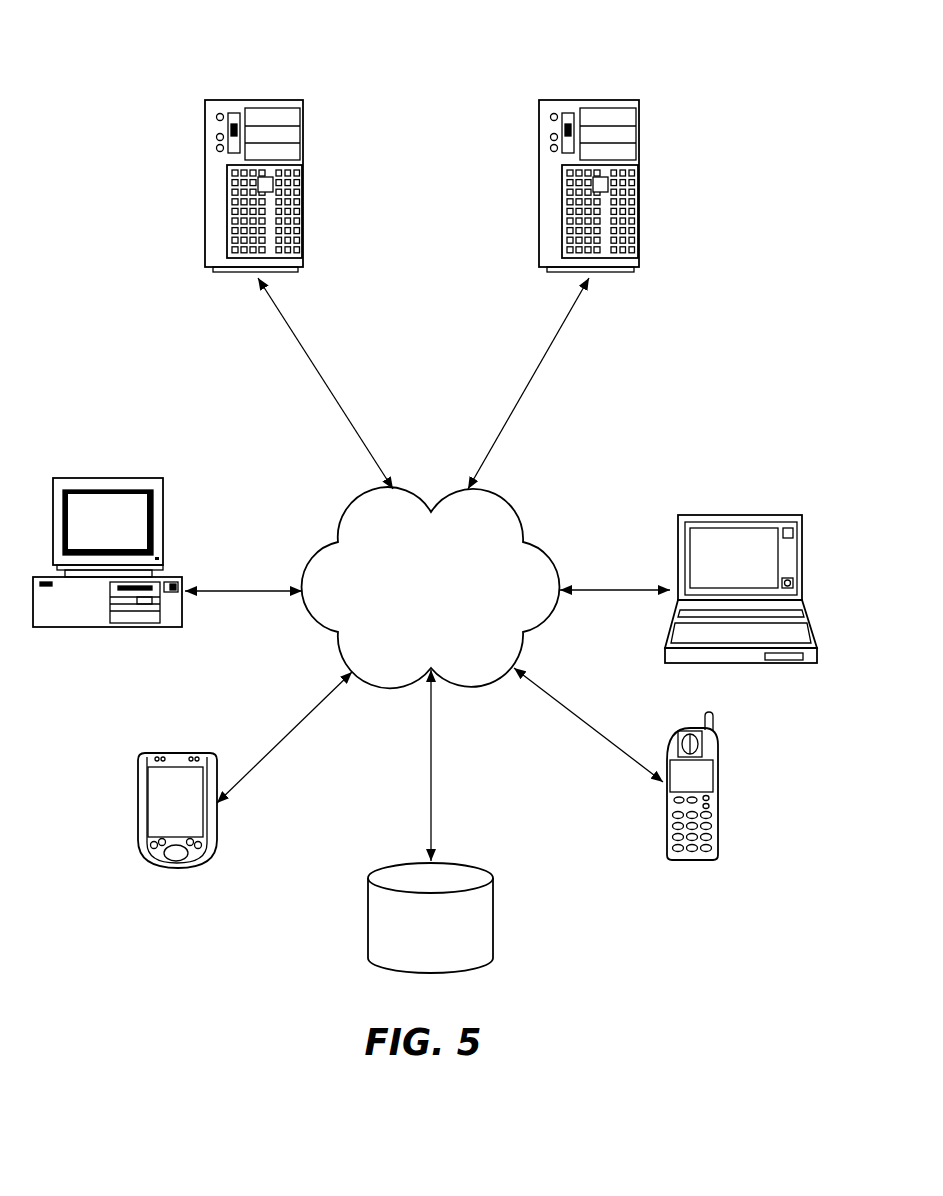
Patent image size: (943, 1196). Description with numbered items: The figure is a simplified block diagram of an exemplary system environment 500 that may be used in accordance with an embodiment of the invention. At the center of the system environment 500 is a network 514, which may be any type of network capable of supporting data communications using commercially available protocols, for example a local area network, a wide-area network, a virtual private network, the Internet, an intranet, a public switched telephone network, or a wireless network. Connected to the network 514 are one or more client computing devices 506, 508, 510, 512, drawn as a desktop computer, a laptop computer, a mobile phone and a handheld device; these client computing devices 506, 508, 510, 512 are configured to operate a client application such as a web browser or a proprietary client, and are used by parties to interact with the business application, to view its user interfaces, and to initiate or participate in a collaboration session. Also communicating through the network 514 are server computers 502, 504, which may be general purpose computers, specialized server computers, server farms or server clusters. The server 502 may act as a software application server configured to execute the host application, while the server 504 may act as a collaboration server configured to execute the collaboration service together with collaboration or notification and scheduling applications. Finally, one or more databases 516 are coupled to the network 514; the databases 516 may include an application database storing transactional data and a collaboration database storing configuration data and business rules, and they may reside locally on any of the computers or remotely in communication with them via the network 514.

The system environment 500 is at (812, 86).
The server computer 502 is at (222, 272).
The server computer 504 is at (558, 272).
The client computing device 506 is at (108, 478).
The client computing device 508 is at (740, 515).
The client computing device 510 is at (690, 862).
The client computing device 512 is at (170, 870).
The network 514 is at (414, 632).
The databases 516 is at (478, 864).